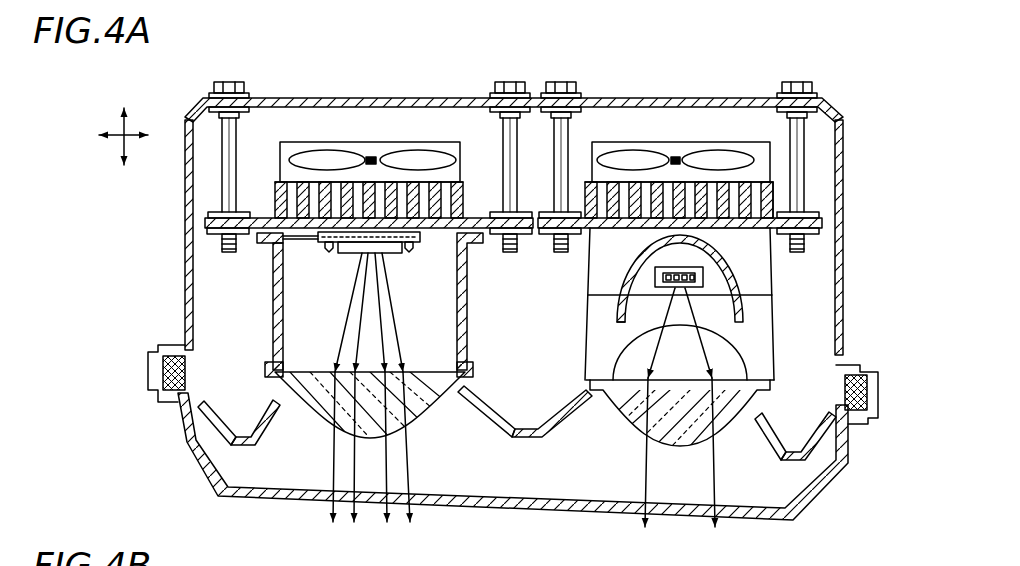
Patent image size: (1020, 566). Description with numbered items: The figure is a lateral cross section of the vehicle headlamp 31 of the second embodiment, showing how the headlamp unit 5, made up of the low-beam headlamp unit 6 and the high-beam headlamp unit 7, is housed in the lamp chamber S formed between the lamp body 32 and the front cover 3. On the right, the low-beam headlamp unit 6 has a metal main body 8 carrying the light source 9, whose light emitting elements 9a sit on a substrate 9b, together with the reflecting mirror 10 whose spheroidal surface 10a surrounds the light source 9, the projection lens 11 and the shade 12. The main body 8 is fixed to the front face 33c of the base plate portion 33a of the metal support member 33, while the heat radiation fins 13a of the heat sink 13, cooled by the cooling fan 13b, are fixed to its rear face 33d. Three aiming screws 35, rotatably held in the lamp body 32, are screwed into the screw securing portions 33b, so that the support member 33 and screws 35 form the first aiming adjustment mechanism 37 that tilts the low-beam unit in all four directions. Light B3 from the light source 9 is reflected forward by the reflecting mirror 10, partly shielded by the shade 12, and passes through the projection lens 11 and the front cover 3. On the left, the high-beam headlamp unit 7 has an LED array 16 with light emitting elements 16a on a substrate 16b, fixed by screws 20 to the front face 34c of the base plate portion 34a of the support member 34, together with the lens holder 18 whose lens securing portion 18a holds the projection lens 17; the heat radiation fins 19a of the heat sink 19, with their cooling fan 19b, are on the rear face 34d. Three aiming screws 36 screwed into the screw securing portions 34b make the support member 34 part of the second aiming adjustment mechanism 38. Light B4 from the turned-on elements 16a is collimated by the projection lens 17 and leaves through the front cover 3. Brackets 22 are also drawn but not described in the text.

The front cover 3 is at (850, 434).
The headlamp unit 5 is at (570, 50).
The low-beam headlamp unit 6 is at (605, 137).
The high-beam headlamp unit 7 is at (573, 107).
The main body 8 is at (765, 285).
The light source 9 is at (785, 50).
The light emitting element 9a is at (682, 268).
The substrate 9b is at (668, 268).
The reflecting mirror 10 is at (737, 278).
The spheroidal surface 10a is at (641, 283).
The projection lens 11 is at (615, 412).
The shade 12 is at (758, 296).
The heat sink 13 is at (715, 50).
The heat radiation fins 13a is at (613, 186).
The cooling fan 13b is at (708, 158).
The LED array 16 is at (345, 50).
The light emitting elements 16a is at (327, 200).
The substrate 16b is at (350, 240).
The projection lens 17 is at (433, 414).
The lens holder 18 is at (313, 305).
The lens securing portion 18a is at (268, 364).
The heat sink 19 is at (363, 50).
The heat radiation fins 19a is at (372, 156).
The cooling fan 19b is at (415, 158).
The screws 20 is at (329, 253).
The bracket 22 is at (220, 436).
The vehicle headlamp 31 is at (266, 40).
The lamp body 32 is at (843, 145).
The support member 33 is at (716, 174).
The base plate portion 33a is at (758, 229).
The screw securing portions 33b is at (545, 234).
The front face 33c is at (623, 229).
The rear face 33d is at (769, 200).
The support member 34 is at (336, 174).
The base plate portion 34a is at (210, 226).
The screw securing portions 34b is at (213, 215).
The front face 34c is at (276, 244).
The rear face 34d is at (290, 248).
The aiming screws 35 is at (557, 82).
The aiming screws 36 is at (229, 82).
The first aiming adjustment mechanism 37 is at (797, 50).
The second aiming adjustment mechanism 38 is at (235, 50).
The light B3 is at (632, 531).
The light B4 is at (418, 528).
The lamp chamber S is at (231, 400).